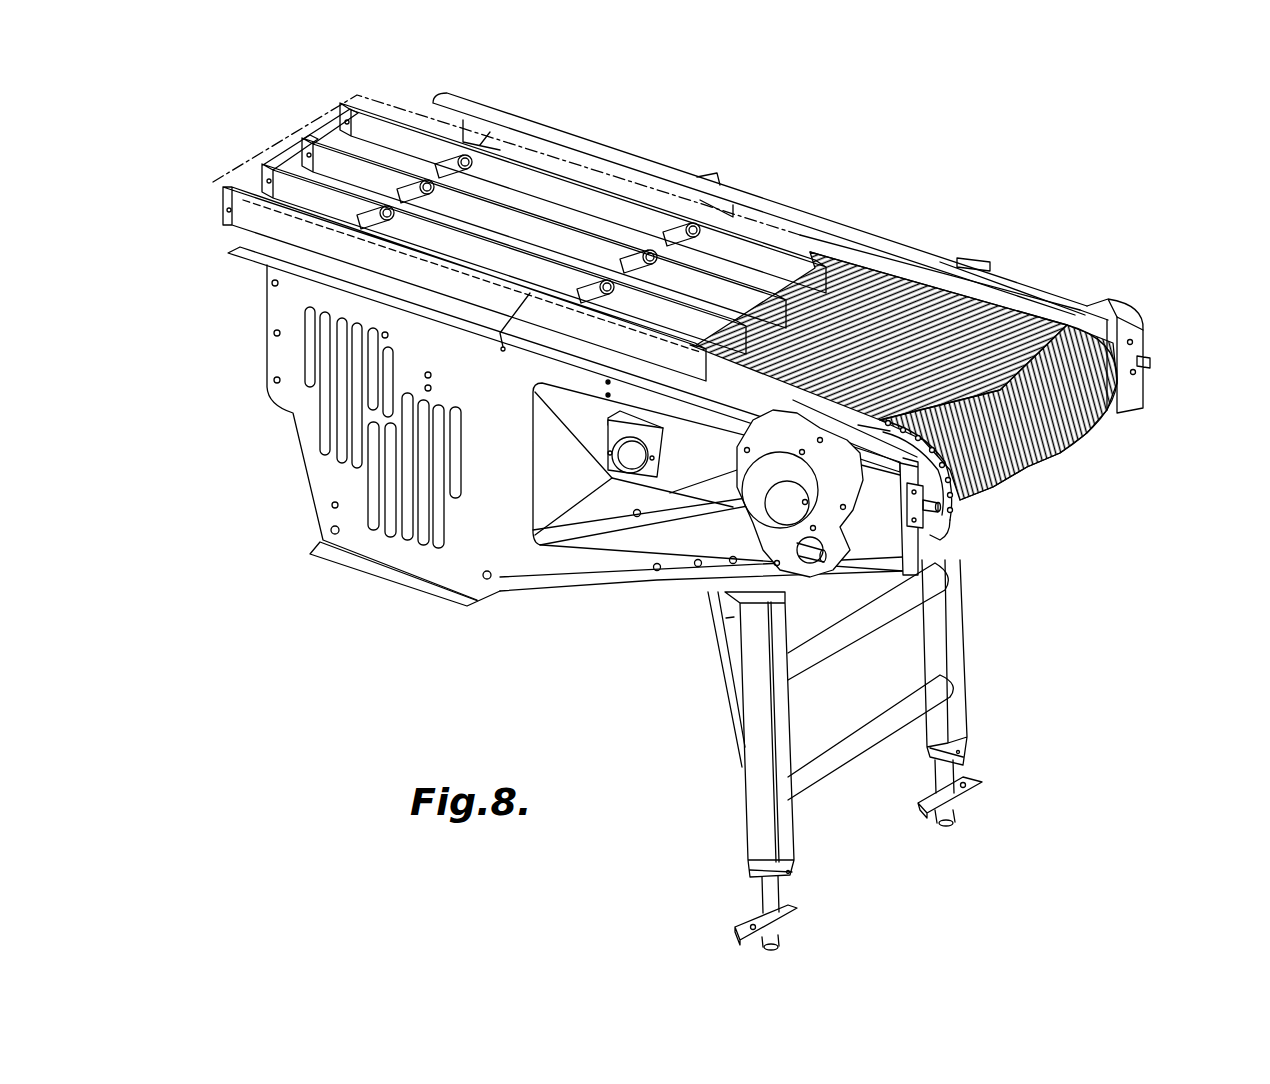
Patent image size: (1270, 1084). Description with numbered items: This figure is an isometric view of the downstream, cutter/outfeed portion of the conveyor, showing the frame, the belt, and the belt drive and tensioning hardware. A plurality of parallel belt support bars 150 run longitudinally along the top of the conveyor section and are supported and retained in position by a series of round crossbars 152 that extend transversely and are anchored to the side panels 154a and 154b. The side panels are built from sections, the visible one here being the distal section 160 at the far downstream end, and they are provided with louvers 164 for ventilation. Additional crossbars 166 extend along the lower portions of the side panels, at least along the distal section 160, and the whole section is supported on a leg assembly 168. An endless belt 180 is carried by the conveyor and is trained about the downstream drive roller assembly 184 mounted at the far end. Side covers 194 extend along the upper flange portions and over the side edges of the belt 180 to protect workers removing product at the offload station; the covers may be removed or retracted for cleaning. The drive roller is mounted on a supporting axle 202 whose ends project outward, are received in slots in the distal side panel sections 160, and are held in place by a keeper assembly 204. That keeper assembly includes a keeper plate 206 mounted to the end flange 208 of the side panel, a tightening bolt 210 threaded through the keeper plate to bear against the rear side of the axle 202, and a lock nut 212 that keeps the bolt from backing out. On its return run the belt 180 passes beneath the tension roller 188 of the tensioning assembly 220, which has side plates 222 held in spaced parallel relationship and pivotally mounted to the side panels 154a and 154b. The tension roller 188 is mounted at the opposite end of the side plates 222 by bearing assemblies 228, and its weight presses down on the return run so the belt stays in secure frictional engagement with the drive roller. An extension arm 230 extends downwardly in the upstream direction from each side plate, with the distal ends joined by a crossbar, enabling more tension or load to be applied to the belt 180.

The belt support bars 150 is at (343, 113).
The round crossbars 152 is at (493, 142).
The tension roller 188 is at (640, 412).
The side covers 194 is at (885, 235).
The drive roller assembly 184 is at (1105, 318).
The louvers 164 is at (325, 375).
The crossbars 166 is at (378, 515).
The distal section 160 is at (335, 588).
The side panel 154a is at (407, 598).
The side panel 154b is at (1113, 417).
The side plates 222 is at (712, 471).
The bearing assemblies 228 is at (613, 477).
The tensioning assembly 220 is at (625, 545).
The extension arm 230 is at (673, 503).
The leg assembly 168 is at (828, 790).
The supporting axle 202 is at (880, 520).
The end flange 208 is at (913, 543).
The keeper plate 206 is at (947, 527).
The keeper assembly 204 is at (940, 520).
The tightening bolt 210 is at (970, 481).
The lock nut 212 is at (1020, 455).
The endless belt 180 is at (1073, 433).